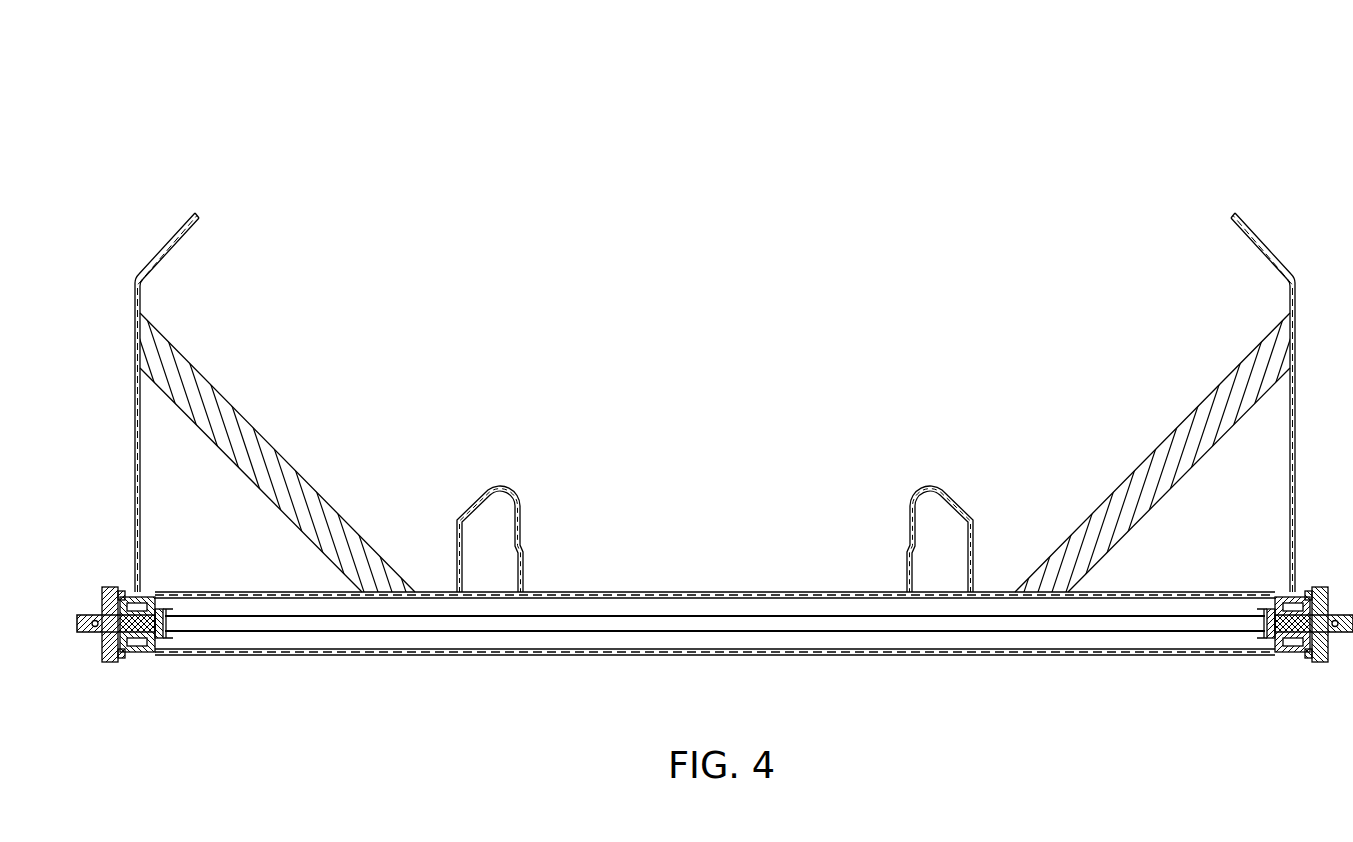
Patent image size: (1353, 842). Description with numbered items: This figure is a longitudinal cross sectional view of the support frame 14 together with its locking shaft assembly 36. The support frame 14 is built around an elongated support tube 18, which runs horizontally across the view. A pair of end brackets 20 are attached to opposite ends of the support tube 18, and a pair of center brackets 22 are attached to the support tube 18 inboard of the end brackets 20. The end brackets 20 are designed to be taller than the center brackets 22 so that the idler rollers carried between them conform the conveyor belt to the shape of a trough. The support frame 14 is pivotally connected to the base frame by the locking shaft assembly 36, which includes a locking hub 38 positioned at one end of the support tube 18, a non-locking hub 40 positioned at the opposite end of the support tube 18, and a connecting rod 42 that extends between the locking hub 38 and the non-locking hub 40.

The support frame 14 is at (715, 454).
The support tube 18 is at (697, 593).
The end brackets 20 is at (140, 498).
The center brackets 22 is at (523, 506).
The locking shaft assembly 36 is at (490, 655).
The locking hub 38 is at (167, 645).
The non-locking hub 40 is at (1290, 645).
The connecting rod 42 is at (1055, 633).